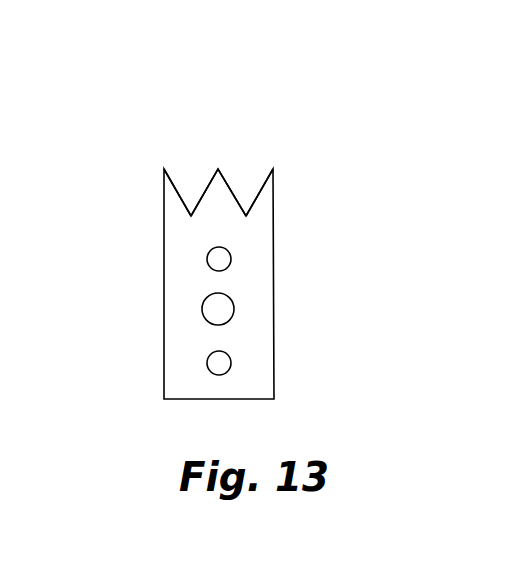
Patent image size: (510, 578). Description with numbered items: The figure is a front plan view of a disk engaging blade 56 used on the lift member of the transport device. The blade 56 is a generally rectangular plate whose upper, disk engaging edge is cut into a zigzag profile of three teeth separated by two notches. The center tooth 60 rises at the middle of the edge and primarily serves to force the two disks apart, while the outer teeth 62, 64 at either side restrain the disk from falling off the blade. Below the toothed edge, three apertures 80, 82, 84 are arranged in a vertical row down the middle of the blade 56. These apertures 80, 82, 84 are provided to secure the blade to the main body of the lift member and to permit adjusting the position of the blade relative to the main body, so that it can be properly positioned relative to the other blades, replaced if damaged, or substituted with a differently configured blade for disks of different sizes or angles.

The disk engaging blade 56 is at (163, 297).
The center tooth 60 is at (217, 168).
The outer tooth 62 is at (168, 200).
The outer tooth 64 is at (265, 204).
The aperture 80 is at (229, 255).
The aperture 82 is at (226, 310).
The aperture 84 is at (229, 367).